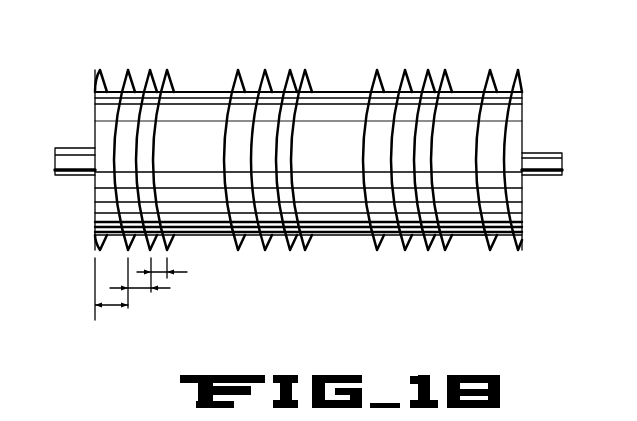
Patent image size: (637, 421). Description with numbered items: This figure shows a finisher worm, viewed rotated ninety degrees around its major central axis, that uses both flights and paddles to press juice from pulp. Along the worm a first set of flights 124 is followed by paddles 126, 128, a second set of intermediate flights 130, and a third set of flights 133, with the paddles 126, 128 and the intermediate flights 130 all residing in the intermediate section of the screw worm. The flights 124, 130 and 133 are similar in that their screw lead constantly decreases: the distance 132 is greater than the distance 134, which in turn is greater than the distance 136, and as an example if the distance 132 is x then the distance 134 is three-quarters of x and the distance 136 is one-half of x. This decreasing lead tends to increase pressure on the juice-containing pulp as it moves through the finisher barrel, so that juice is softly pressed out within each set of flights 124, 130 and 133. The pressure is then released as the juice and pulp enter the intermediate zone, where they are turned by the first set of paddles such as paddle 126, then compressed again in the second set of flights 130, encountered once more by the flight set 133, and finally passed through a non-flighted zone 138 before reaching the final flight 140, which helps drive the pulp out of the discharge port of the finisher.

The flights 124 is at (128, 72).
The paddle 126 is at (215, 157).
The paddle 128 is at (353, 158).
The intermediate flights 130 is at (290, 70).
The distance 132 is at (112, 307).
The distance 134 is at (140, 290).
The distance 136 is at (158, 273).
The non-flighted zone 138 is at (471, 254).
The final flight 140 is at (492, 75).
The third set of flights 133 is at (428, 73).